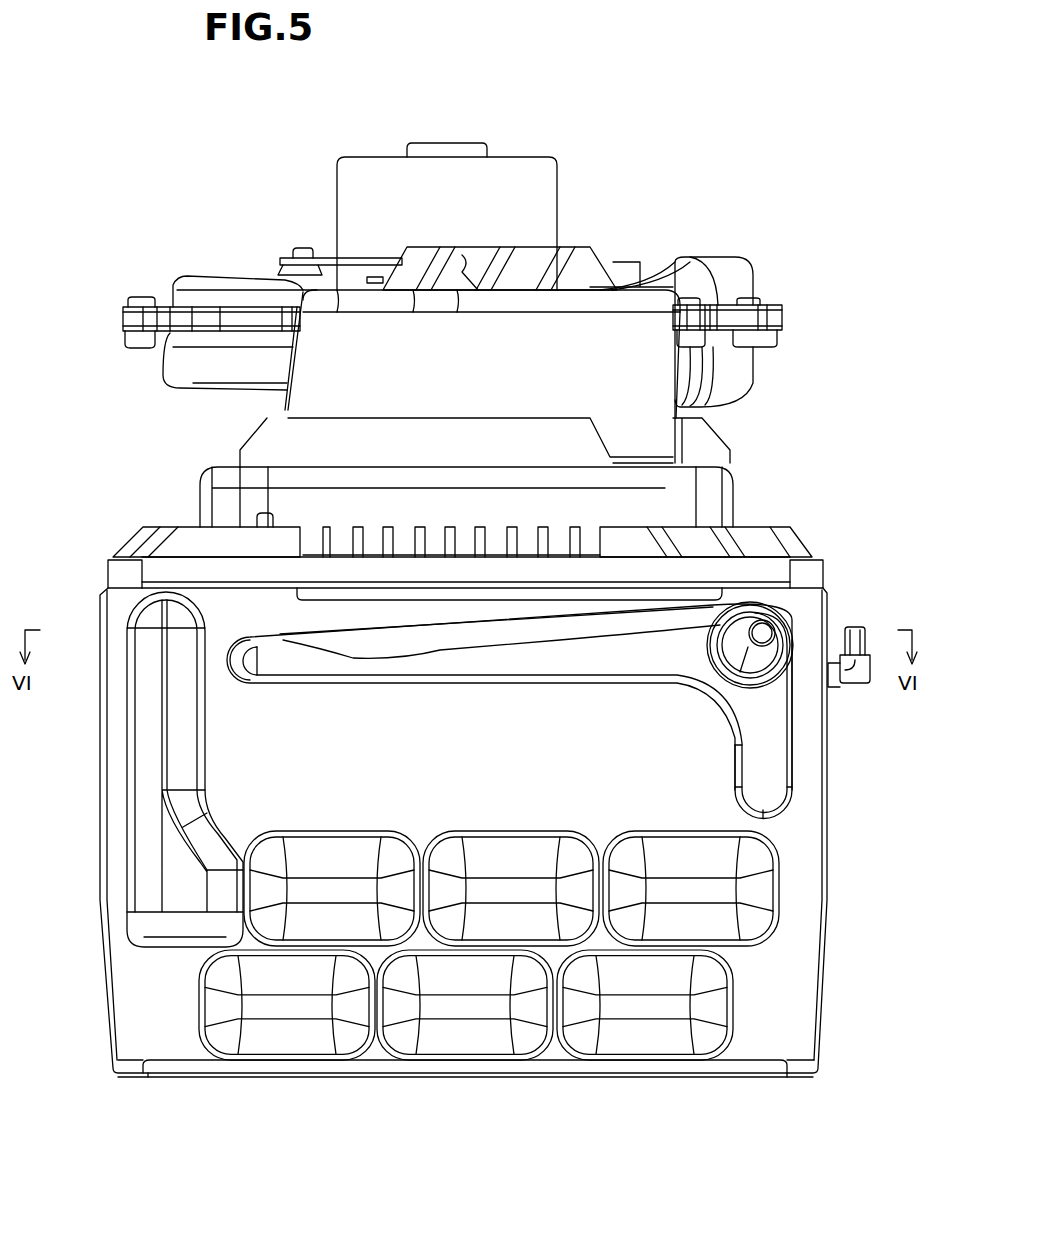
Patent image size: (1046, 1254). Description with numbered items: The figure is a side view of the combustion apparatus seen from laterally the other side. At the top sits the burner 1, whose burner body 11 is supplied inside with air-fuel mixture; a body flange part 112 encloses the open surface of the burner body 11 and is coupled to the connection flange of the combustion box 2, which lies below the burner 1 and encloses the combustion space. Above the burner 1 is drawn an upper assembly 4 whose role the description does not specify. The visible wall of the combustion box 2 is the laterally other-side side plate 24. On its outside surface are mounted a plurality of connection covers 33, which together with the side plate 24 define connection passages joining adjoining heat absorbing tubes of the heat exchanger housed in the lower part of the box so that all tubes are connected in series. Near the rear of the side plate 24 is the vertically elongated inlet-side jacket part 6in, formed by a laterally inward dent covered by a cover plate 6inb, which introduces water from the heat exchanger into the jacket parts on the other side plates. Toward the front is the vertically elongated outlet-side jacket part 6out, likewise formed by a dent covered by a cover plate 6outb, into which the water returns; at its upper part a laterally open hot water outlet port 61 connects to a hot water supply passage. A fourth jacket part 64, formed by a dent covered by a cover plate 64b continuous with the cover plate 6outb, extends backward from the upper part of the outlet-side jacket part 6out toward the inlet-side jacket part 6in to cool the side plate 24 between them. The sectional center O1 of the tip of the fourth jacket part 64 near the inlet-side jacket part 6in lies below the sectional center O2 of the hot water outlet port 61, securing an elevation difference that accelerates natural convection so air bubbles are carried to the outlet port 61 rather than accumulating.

The fan motor assembly 4 is at (248, 281).
The burner 1 is at (241, 432).
The burner body 11 is at (200, 470).
The body flange part 112 is at (190, 557).
The combustion box 2 is at (97, 950).
The inlet-side jacket part 6in is at (123, 769).
The cover plate 6inb is at (148, 758).
The hot water outlet port 61 is at (690, 680).
The sectional center of the tip of the fourth jacket part O1 is at (255, 662).
The sectional center of the hot water outlet port O2 is at (750, 652).
The fourth jacket part 64 is at (501, 694).
The cover plate 64b is at (452, 660).
The outlet-side jacket part 6out is at (825, 715).
The cover plate 6outb is at (772, 724).
The connection covers 33 is at (620, 1010).
The other-side side plate 24 is at (173, 1018).